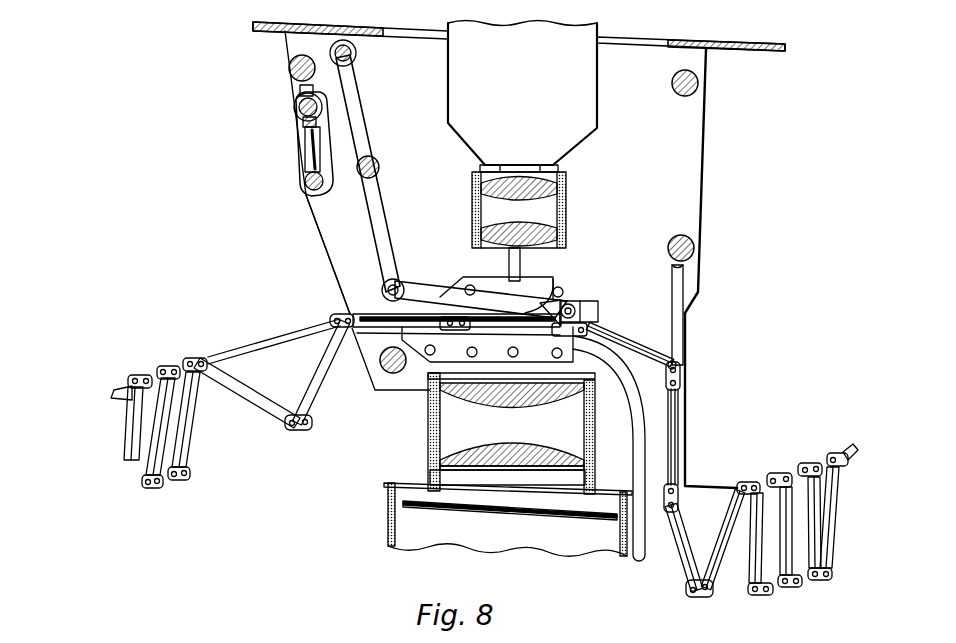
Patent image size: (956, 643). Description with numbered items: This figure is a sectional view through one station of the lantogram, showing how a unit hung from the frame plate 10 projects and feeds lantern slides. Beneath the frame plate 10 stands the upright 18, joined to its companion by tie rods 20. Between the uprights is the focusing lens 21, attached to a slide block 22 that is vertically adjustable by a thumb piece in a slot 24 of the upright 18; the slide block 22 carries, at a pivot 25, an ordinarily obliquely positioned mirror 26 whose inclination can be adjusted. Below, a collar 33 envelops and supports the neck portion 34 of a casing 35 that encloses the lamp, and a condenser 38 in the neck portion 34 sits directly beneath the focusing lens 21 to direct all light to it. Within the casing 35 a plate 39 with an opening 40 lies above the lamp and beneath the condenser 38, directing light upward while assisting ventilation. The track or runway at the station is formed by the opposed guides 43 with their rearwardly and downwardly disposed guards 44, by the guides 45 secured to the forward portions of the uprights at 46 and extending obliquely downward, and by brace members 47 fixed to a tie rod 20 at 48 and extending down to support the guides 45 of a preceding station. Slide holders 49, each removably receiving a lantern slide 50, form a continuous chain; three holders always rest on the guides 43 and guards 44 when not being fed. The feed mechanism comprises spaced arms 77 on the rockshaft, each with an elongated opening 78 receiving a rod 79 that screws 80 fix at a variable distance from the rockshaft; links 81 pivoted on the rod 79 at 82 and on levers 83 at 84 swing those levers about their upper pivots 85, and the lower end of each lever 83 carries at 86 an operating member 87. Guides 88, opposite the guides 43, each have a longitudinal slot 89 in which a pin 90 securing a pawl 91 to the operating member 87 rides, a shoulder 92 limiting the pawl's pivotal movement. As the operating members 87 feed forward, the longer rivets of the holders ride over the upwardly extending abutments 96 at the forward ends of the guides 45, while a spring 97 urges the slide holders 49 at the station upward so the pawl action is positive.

The frame plate 10 is at (519, 46).
The upright 18 is at (688, 168).
The tie rods 20 is at (288, 62).
The focusing lens 21 is at (548, 212).
The slide block 22 is at (562, 234).
The slot 24 is at (514, 262).
The pivot 25 is at (556, 170).
The mirror 26 is at (575, 117).
The collar 33 is at (428, 410).
The neck portion 34 is at (430, 472).
The casing 35 is at (395, 527).
The condenser 38 is at (450, 430).
The plate 39 is at (437, 512).
The opening 40 is at (512, 512).
The guides 43 is at (450, 346).
The guards 44 is at (643, 445).
The guides 45 is at (294, 345).
The securing point 46 is at (343, 313).
The brace members 47 is at (685, 353).
The securing point 48 is at (697, 270).
The slide holder 49 is at (552, 329).
The lantern slide 50 is at (386, 316).
The arms 77 is at (303, 144).
The elongated opening 78 is at (305, 168).
The rod 79 is at (305, 182).
The screws 80 is at (300, 133).
The links 81 is at (335, 180).
The pivot 82 is at (306, 197).
The levers 83 is at (378, 122).
The pivot 84 is at (380, 166).
The pivot 85 is at (356, 53).
The pivot 86 is at (398, 283).
The operating member 87 is at (433, 293).
The guides 88 is at (582, 300).
The longitudinal slot 89 is at (598, 312).
The pin 90 is at (573, 305).
The pawl 91 is at (557, 300).
The shoulder 92 is at (528, 300).
The abutments 96 is at (739, 480).
The spring 97 is at (472, 333).